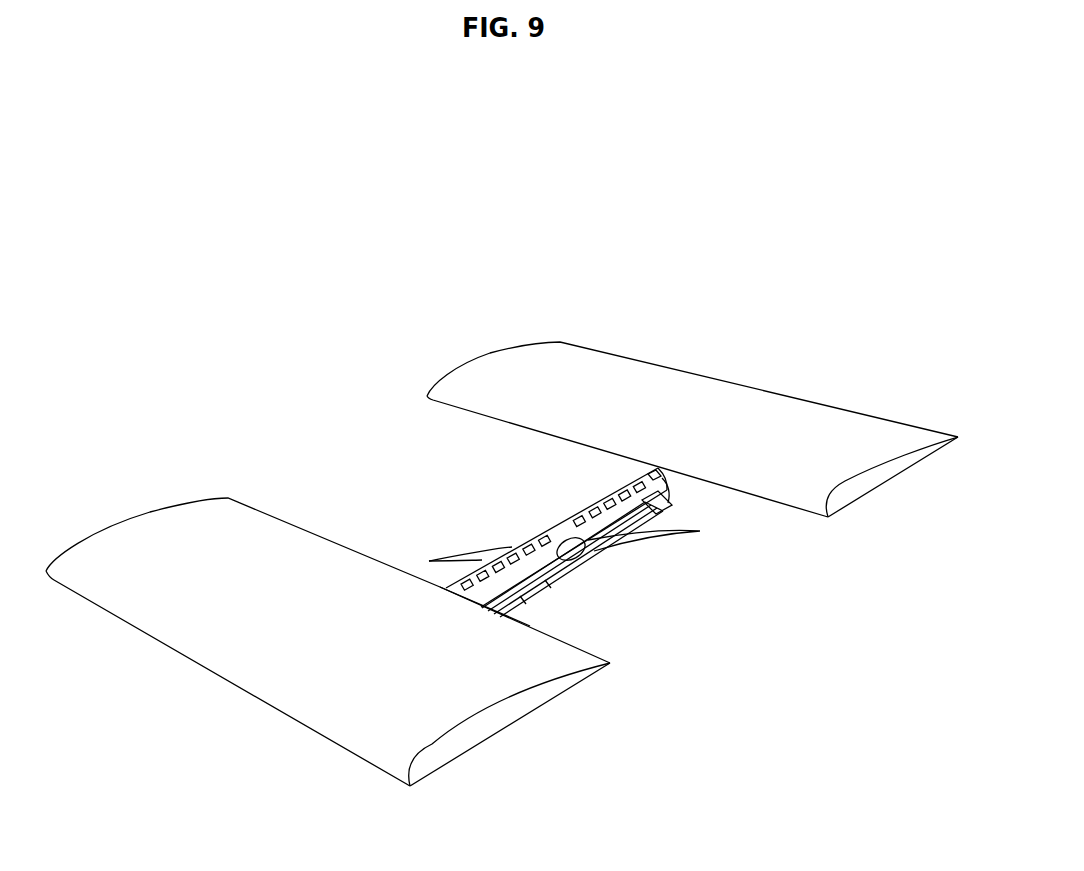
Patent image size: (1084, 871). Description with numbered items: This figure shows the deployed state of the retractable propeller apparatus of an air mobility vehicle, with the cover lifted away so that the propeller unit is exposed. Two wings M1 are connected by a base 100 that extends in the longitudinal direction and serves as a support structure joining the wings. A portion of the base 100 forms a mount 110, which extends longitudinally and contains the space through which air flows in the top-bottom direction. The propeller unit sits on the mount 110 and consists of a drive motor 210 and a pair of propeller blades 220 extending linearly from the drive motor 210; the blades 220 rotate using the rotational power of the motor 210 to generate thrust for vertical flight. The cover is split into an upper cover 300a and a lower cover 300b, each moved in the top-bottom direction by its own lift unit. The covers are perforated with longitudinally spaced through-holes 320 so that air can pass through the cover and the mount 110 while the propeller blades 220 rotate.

The wing module M1 is at (190, 523).
The base 100 is at (683, 483).
The mount 110 is at (498, 610).
The drive motor 210 is at (563, 565).
The propeller blades 220 is at (665, 540).
The upper cover 300a is at (544, 431).
The lower cover 300b is at (583, 563).
The through-holes 320 is at (625, 483).